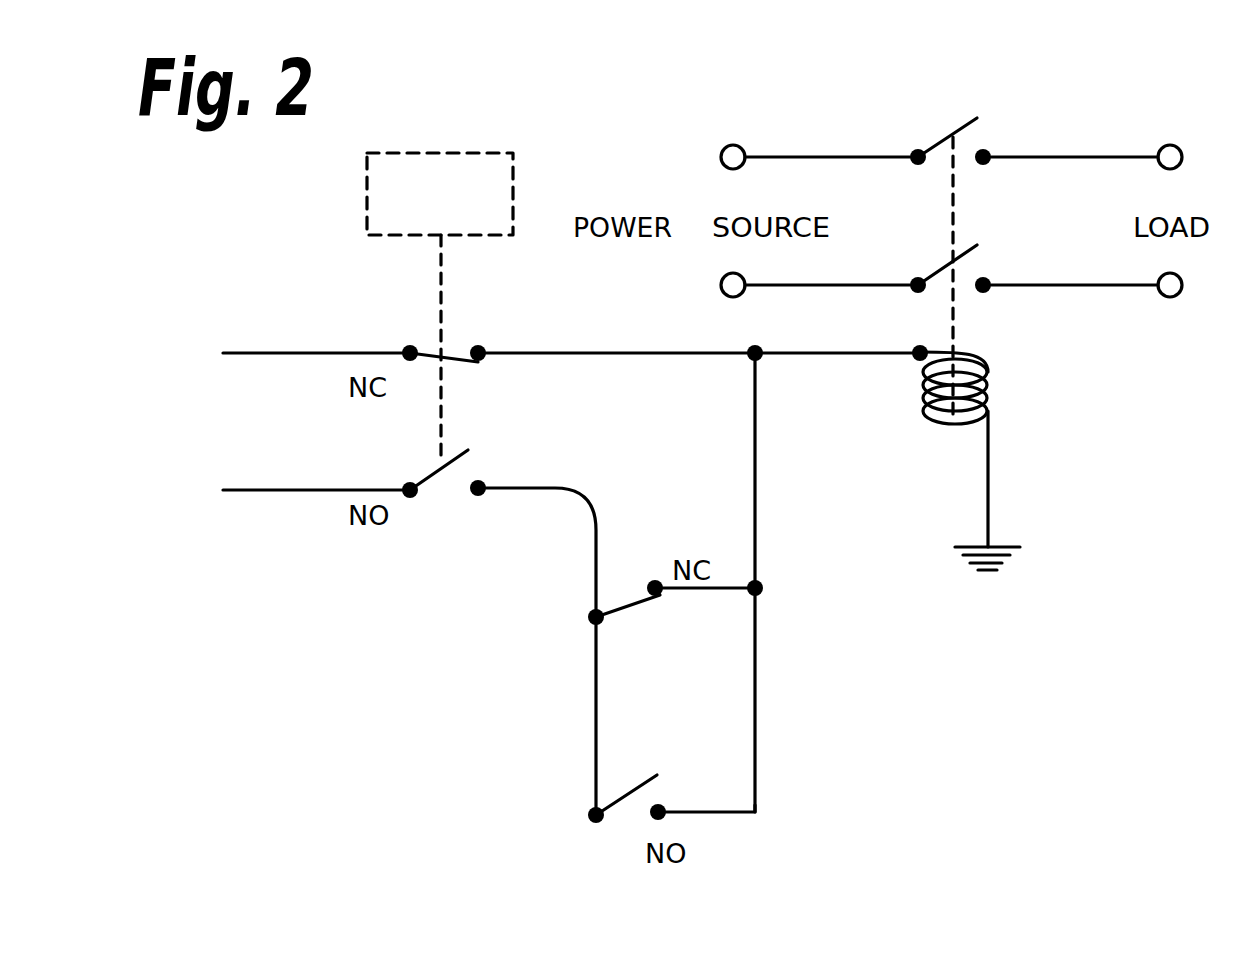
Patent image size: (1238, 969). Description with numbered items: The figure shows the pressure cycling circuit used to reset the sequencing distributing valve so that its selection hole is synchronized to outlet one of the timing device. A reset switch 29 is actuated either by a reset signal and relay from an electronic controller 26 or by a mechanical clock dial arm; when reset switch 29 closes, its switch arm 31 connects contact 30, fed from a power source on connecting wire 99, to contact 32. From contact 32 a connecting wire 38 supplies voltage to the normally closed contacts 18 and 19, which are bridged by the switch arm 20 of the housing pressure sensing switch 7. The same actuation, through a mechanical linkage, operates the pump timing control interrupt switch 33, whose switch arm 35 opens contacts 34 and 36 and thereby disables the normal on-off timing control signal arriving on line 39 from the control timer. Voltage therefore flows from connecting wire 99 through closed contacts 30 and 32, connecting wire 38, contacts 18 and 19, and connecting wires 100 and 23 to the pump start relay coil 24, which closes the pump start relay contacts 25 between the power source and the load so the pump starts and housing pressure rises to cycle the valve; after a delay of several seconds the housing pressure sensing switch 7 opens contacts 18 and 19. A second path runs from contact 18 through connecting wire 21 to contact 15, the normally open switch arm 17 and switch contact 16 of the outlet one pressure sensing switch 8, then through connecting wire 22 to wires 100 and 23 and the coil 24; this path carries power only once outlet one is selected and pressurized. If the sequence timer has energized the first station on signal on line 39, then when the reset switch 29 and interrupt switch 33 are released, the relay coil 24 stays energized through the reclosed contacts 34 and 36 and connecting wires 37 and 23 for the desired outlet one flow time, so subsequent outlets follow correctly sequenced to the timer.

The housing pressure sensing switch 7 is at (615, 582).
The pressure sensing switch 8 is at (663, 793).
The contact 15 is at (594, 817).
The switch contact 16 is at (658, 814).
The normally open switch arm 17 is at (622, 797).
The normally closed contact 18 is at (594, 617).
The normally closed contact 19 is at (655, 580).
The switch arm 20 is at (628, 612).
The connecting wire 21 is at (593, 740).
The connecting wire 22 is at (755, 640).
The connecting wire 23 is at (815, 355).
The pump start relay coil 24 is at (988, 408).
The pump start relay contacts 25 is at (933, 140).
The electronic controller 26 is at (445, 153).
The reset switch 29 is at (476, 463).
The contact 30 is at (410, 485).
The switch arm 31 is at (430, 472).
The contact 32 is at (478, 492).
The pump timing control interrupt switch 33 is at (430, 350).
The contact 34 is at (410, 345).
The switch arm 35 is at (458, 357).
The contact 36 is at (478, 345).
The connecting wire 37 is at (643, 355).
The connecting wire 38 is at (583, 498).
The line 39 is at (277, 352).
The connecting wire 99 is at (300, 488).
The connecting wire 100 is at (758, 475).